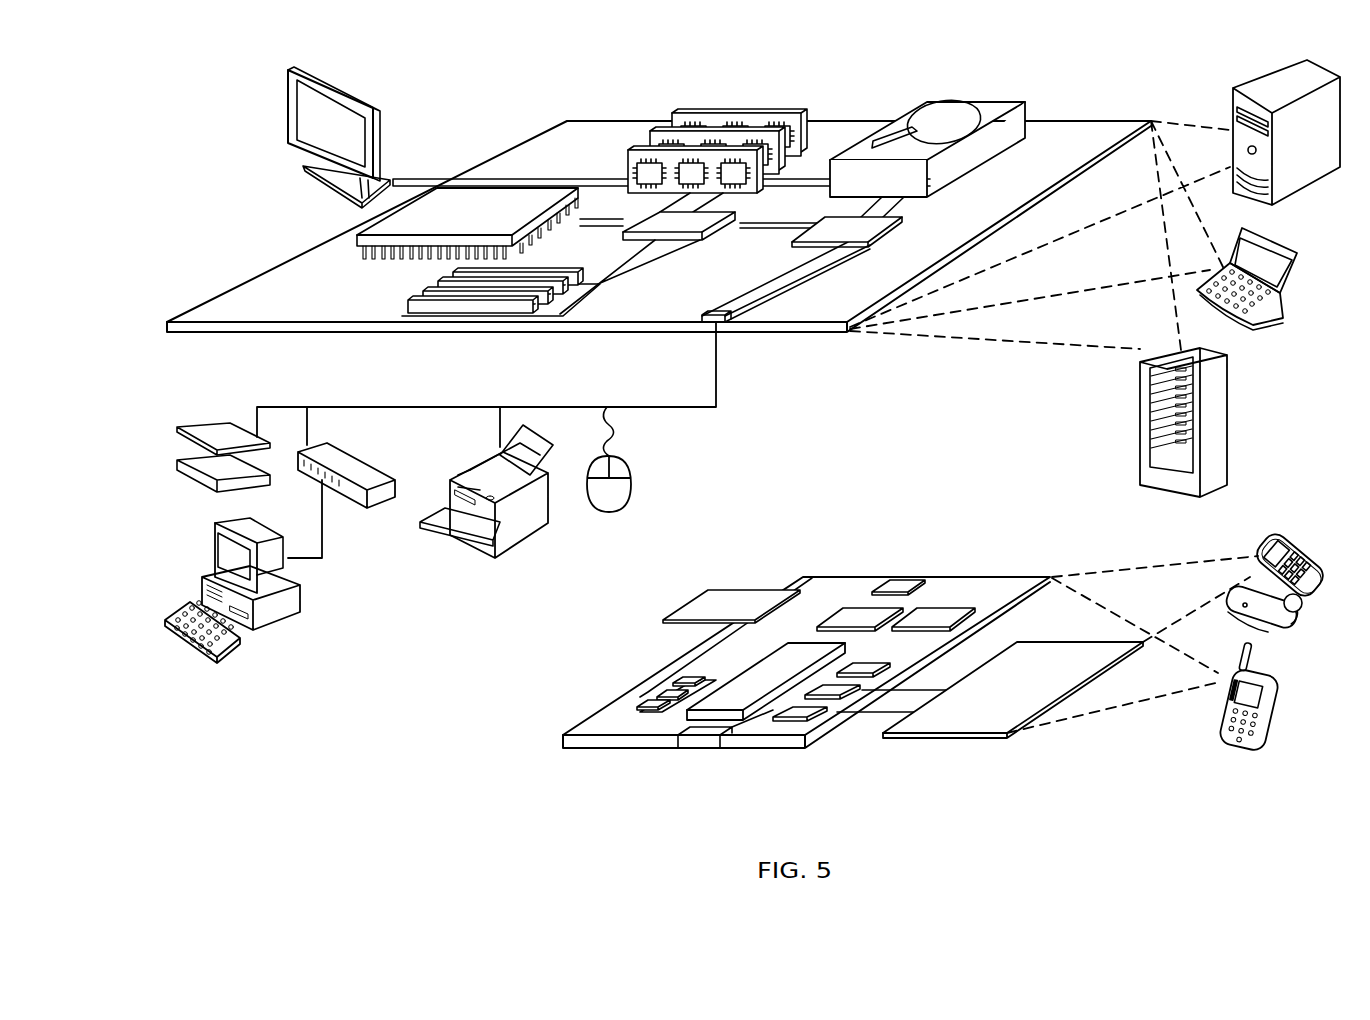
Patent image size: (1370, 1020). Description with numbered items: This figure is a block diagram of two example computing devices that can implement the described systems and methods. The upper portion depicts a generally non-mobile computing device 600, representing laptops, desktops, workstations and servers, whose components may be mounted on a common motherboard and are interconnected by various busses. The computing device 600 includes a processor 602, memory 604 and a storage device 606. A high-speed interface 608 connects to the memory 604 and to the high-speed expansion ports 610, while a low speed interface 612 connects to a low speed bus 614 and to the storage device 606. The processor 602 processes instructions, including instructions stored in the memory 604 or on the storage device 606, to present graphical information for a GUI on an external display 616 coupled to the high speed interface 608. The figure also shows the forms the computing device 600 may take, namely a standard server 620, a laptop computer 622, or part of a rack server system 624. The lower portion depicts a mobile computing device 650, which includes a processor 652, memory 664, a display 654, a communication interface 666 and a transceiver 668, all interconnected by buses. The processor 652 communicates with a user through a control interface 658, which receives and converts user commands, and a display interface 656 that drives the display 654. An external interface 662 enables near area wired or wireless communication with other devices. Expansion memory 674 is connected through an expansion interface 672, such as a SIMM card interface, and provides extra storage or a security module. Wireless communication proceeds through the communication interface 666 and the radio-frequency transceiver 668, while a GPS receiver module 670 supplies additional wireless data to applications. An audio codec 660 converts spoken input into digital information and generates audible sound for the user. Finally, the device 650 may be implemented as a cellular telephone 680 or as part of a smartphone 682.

The computing device 600 is at (489, 98).
The processor 602 is at (360, 238).
The memory 604 is at (688, 112).
The storage device 606 is at (918, 104).
The high-speed interface 608 is at (648, 236).
The high-speed expansion ports 610 is at (412, 301).
The low speed interface 612 is at (835, 237).
The low speed bus 614 is at (727, 323).
The display 616 is at (290, 71).
The standard server 620 is at (1232, 107).
The laptop computer 622 is at (1294, 252).
The rack server system 624 is at (1140, 446).
The computing device 650 is at (543, 746).
The processor 652 is at (740, 712).
The display 654 is at (975, 722).
The display interface 656 is at (802, 720).
The control interface 658 is at (836, 697).
The audio codec 660 is at (862, 676).
The external interface 662 is at (703, 748).
The memory 664 is at (660, 694).
The communication interface 666 is at (855, 612).
The transceiver 668 is at (935, 612).
The GPS receiver module 670 is at (907, 580).
The expansion interface 672 is at (783, 587).
The expansion memory 674 is at (708, 590).
The cellular telephone 680 is at (1282, 533).
The smartphone 682 is at (1222, 715).